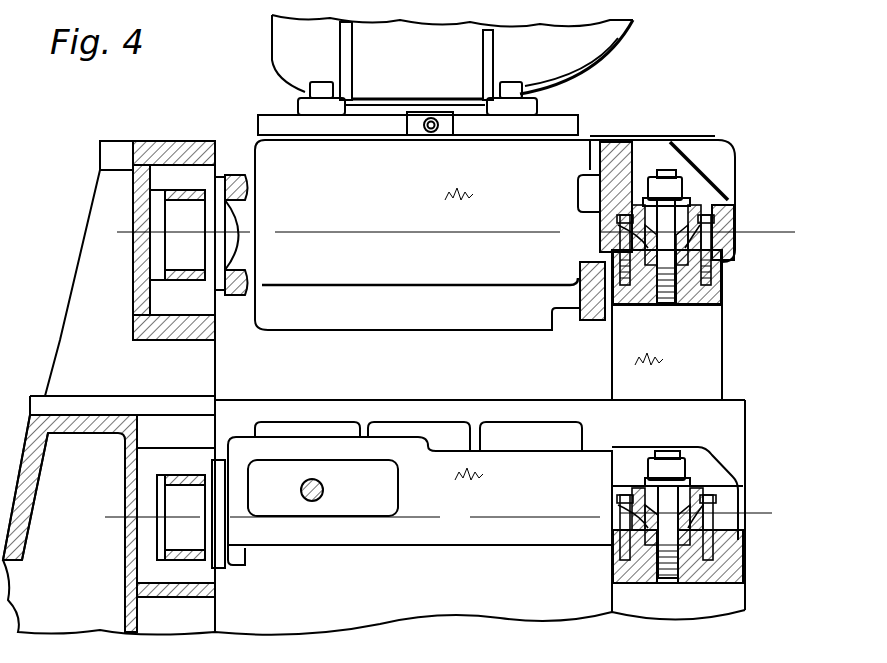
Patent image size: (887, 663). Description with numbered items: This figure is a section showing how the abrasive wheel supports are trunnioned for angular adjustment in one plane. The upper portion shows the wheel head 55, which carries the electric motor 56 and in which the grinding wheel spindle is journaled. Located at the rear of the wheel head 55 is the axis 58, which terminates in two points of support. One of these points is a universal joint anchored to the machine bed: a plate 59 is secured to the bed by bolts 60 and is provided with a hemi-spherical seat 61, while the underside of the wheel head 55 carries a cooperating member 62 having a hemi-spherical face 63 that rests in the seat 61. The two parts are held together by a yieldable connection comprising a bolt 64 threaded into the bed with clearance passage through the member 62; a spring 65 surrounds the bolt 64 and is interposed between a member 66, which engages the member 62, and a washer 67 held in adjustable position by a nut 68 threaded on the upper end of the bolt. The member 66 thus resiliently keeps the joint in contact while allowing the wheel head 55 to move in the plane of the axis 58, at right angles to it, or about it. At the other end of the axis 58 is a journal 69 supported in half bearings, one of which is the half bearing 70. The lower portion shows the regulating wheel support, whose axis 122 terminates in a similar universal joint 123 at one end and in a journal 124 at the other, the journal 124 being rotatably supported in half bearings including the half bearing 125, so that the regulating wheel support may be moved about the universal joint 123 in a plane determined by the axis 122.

The wheel head 55 is at (562, 165).
The electric motor 56 is at (588, 40).
The axis 58 is at (400, 213).
The plate 59 is at (718, 265).
The bolts 60 is at (722, 285).
The hemi-spherical seat 61 is at (700, 300).
The cooperating member 62 is at (730, 245).
The hemi-spherical face 63 is at (618, 297).
The bolt 64 is at (700, 196).
The spring 65 is at (710, 200).
The member 66 is at (618, 244).
The washer 67 is at (690, 190).
The nut 68 is at (680, 175).
The journal 69 is at (178, 245).
The half bearing 70 is at (181, 196).
The axis 122 is at (488, 513).
The universal joint 123 is at (730, 550).
The journal 124 is at (178, 530).
The half bearing 125 is at (175, 464).